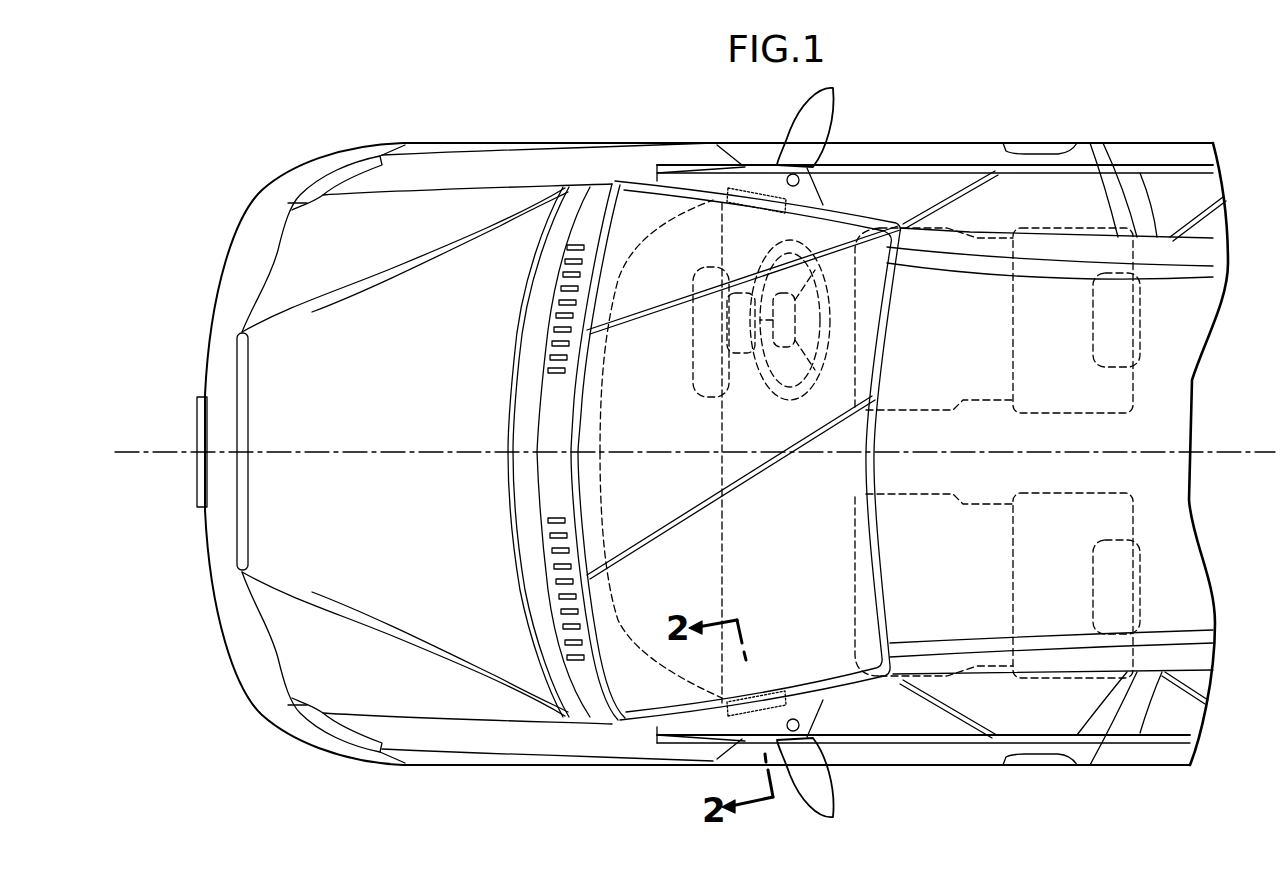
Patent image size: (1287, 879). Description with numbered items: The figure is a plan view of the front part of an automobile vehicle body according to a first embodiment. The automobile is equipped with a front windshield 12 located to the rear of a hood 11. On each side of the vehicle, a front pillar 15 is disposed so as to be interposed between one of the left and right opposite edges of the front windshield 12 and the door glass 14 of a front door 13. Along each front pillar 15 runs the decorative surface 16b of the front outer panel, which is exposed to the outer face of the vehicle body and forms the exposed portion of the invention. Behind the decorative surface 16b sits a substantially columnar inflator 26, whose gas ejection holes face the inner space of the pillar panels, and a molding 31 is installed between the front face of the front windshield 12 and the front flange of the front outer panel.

The hood 11 is at (427, 213).
The front windshield 12 is at (613, 407).
The front door 13 is at (977, 148).
The door glass 14 is at (1070, 193).
The front pillar 15 is at (842, 205).
The decorative surface 16b is at (690, 178).
The inflator 26 is at (747, 190).
The molding 31 is at (872, 472).